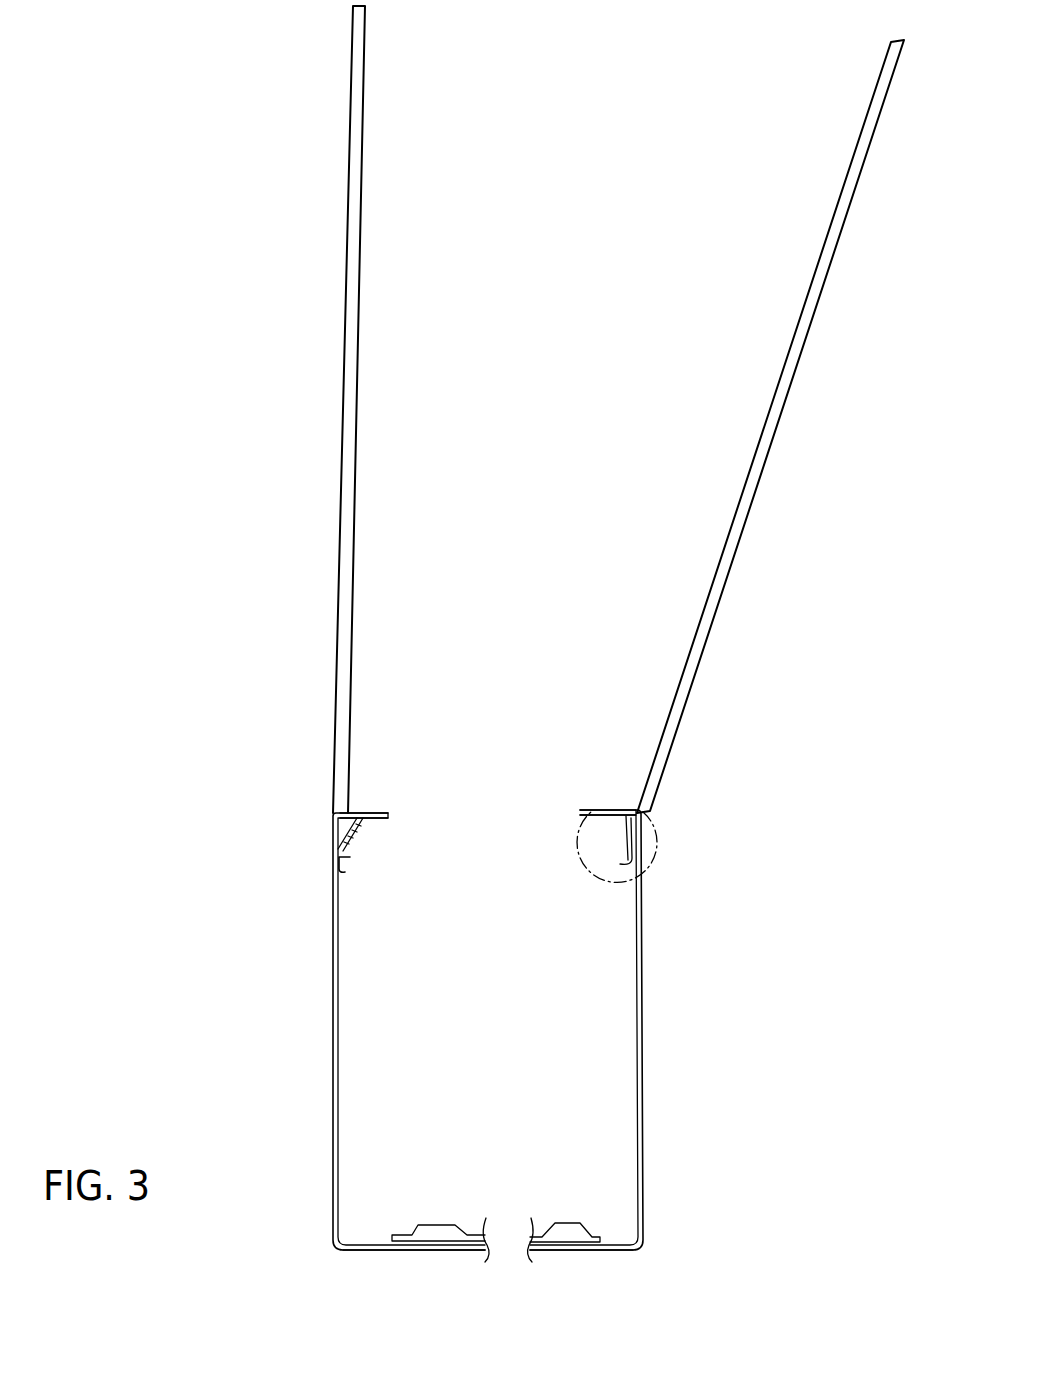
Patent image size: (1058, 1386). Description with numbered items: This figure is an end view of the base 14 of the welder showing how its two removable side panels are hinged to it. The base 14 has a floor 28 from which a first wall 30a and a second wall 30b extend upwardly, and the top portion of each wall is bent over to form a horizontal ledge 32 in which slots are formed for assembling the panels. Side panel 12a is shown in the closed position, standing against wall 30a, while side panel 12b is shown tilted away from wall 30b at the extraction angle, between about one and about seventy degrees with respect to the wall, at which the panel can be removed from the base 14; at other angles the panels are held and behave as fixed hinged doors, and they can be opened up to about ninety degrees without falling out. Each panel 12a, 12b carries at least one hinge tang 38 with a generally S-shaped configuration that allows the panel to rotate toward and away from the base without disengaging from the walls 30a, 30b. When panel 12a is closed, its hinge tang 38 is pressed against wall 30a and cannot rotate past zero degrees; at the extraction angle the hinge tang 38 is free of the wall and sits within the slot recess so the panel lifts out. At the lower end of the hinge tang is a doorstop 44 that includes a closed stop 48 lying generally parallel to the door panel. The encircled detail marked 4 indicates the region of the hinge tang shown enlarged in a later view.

The removable side panel 12a is at (345, 300).
The removable side panel 12b is at (820, 290).
The first wall 30a is at (331, 1040).
The second wall 30b is at (644, 1033).
The horizontal ledge 32 is at (372, 808).
The hinge tang 38 is at (350, 840).
The closed stop 48 is at (353, 865).
The doorstop 44 is at (347, 888).
The floor 28 is at (366, 1245).
The section line of FIG. 4 is at (606, 786).
The base 14 is at (712, 1212).